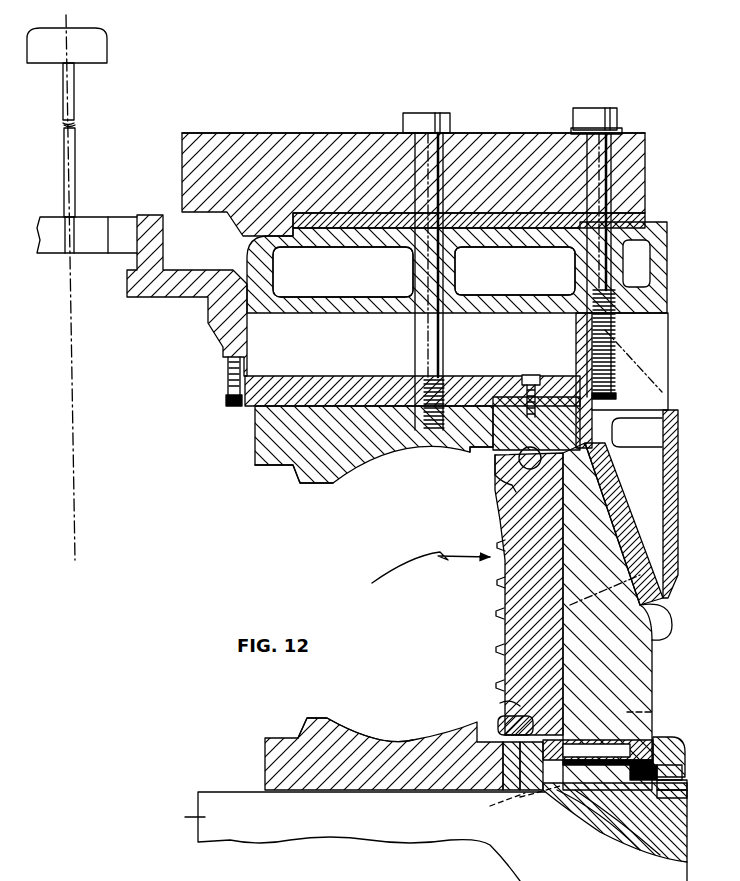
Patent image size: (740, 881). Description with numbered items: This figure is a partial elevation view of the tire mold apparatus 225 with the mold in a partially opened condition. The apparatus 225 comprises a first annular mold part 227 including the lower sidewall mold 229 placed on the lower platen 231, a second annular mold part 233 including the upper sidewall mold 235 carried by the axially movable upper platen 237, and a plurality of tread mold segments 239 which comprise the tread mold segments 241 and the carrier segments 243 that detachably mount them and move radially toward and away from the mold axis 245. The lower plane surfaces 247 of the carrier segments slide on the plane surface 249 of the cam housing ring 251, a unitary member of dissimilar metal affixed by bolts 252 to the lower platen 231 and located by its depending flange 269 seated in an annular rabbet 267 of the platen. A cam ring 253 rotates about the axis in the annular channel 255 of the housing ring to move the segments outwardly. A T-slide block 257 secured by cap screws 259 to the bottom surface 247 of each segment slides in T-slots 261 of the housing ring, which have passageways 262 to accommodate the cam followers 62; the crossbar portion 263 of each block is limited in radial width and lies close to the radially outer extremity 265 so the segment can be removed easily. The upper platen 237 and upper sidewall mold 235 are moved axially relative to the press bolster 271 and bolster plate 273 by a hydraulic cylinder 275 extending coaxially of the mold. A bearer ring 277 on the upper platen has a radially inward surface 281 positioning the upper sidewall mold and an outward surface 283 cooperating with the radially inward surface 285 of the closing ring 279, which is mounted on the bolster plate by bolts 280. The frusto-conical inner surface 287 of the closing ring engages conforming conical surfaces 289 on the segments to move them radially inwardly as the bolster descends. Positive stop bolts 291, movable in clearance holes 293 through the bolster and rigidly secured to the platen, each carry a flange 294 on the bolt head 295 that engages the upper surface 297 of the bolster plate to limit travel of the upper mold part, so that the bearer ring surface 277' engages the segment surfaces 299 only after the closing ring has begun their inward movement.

The tire mold apparatus 225 is at (415, 574).
The first annular mold part 227 is at (255, 768).
The lower sidewall mold 229 is at (378, 735).
The lower platen 231 is at (198, 818).
The second annular mold part 233 is at (247, 440).
The upper sidewall mold 235 is at (342, 464).
The upper platen 237 is at (358, 390).
The tread mold segments 239 is at (512, 597).
The tread mold segments 241 is at (535, 628).
The carrier segments 243 is at (637, 683).
The mold axis 245 is at (78, 548).
The lower plane surfaces 247 is at (512, 714).
The plane surface 249 is at (506, 702).
The cam housing ring 251 is at (503, 776).
The bolts 252 is at (494, 805).
The cam ring 253 is at (585, 792).
The annular channel 255 is at (540, 798).
The T-slide block 257 is at (670, 740).
The cap screws 259 is at (656, 713).
The T-slots 261 is at (682, 752).
The passageways 262 is at (686, 787).
The crossbar portion 263 is at (668, 774).
The radially outer extremity 265 is at (670, 767).
The annular rabbet 267 is at (662, 822).
The depending flange 269 is at (688, 798).
The press bolster 271 is at (240, 256).
The bolster plate 273 is at (210, 174).
The hydraulic cylinder 275 is at (96, 60).
The bearer ring 277 is at (531, 398).
The bearer ring surface 277' is at (487, 488).
The closing ring 279 is at (648, 392).
The bolts 280 is at (595, 112).
The radially inward surface 281 is at (469, 453).
The outward surface 283 is at (600, 440).
The radially inward surface 285 is at (576, 356).
The frusto-conical inner surface 287 is at (672, 638).
The conical surfaces 289 is at (612, 482).
The bolts 291 is at (427, 259).
The clearance holes 293 is at (443, 275).
The flange 294 is at (405, 138).
The bolt head 295 is at (428, 117).
The upper surface 297 is at (497, 133).
The surfaces 299 is at (493, 452).
The cam followers 62 is at (610, 803).